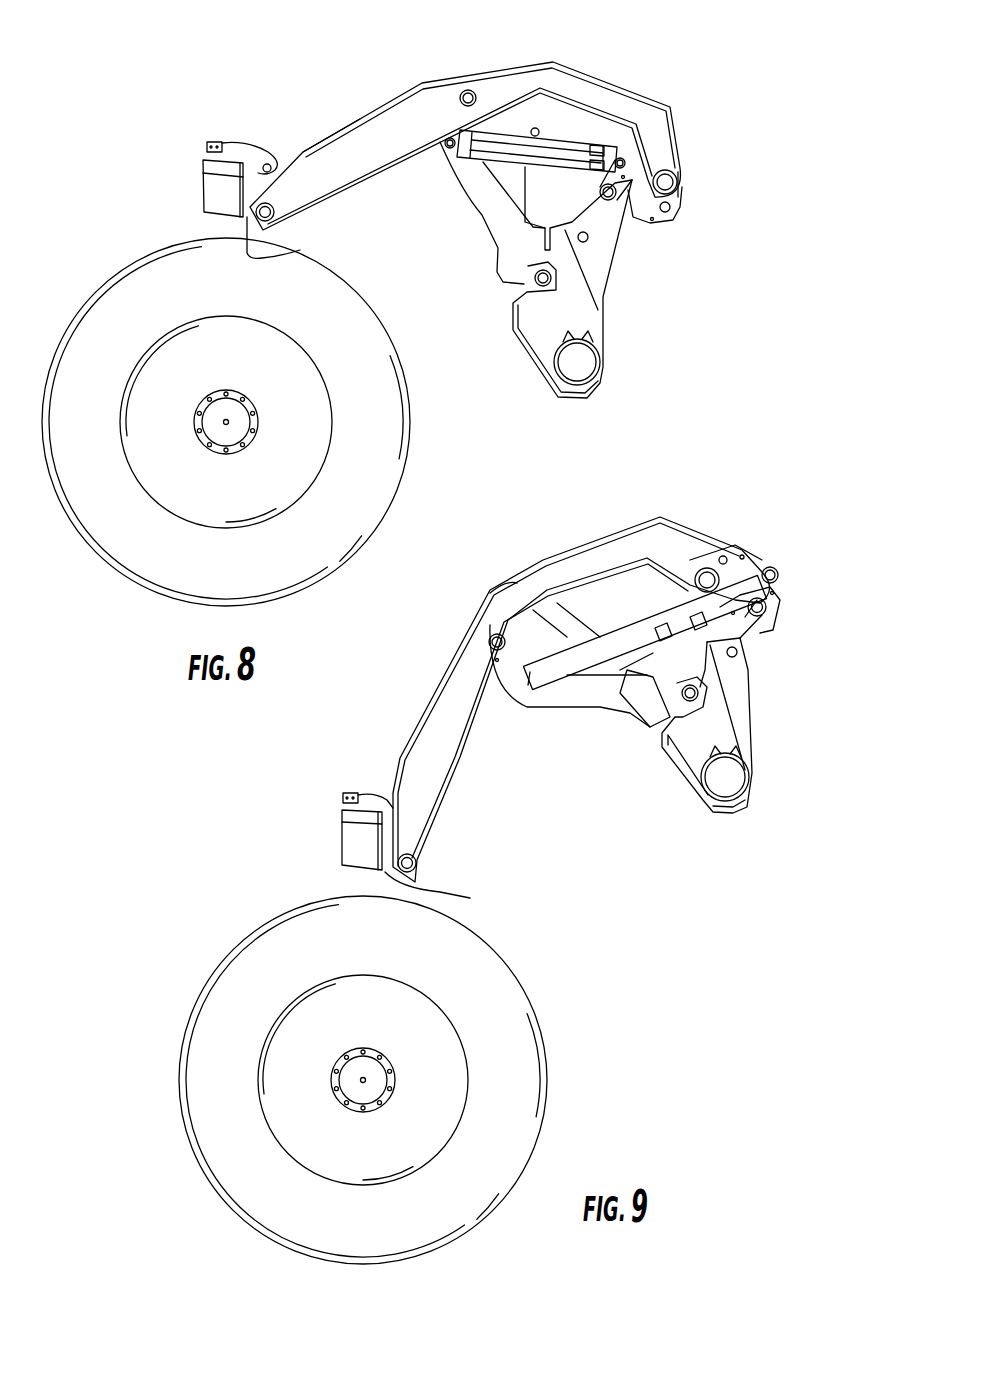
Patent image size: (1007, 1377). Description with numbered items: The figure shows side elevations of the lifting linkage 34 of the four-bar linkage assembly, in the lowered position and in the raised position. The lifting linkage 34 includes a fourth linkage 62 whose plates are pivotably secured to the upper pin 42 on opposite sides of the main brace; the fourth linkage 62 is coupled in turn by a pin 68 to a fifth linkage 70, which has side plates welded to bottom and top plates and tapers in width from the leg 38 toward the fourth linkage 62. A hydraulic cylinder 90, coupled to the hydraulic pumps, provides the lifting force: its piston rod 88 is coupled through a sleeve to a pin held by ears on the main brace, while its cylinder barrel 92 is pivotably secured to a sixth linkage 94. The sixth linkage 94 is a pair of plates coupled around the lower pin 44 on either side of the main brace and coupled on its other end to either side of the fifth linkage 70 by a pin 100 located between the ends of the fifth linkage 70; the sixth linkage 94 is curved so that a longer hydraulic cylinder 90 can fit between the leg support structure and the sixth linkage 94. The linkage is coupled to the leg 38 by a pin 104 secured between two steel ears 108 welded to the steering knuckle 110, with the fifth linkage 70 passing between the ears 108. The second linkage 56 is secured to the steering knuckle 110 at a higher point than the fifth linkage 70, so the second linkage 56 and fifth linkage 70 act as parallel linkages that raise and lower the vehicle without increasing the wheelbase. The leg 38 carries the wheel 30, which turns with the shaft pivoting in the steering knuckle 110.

In FIG. 8, the wheel 30 is at (411, 420).
In FIG. 9, the wheel 30 is at (547, 1110).
In FIG. 8, the lifting linkage 34 is at (292, 92).
In FIG. 9, the lifting linkage 34 is at (458, 608).
In FIG. 8, the leg 38 is at (182, 234).
In FIG. 9, the leg 38 is at (332, 885).
In FIG. 8, the pin 42 is at (632, 167).
In FIG. 9, the pin 42 is at (778, 587).
In FIG. 8, the pin 44 is at (520, 290).
In FIG. 9, the pin 44 is at (703, 690).
In FIG. 8, the second linkage 56 is at (308, 118).
In FIG. 8, the fourth linkage 62 is at (678, 148).
In FIG. 9, the fourth linkage 62 is at (766, 613).
In FIG. 8, the pin 68 is at (680, 190).
In FIG. 9, the pin 68 is at (714, 572).
In FIG. 8, the fifth linkage 70 is at (410, 103).
In FIG. 9, the fifth linkage 70 is at (463, 680).
In FIG. 8, the piston rod 88 is at (622, 150).
In FIG. 9, the piston rod 88 is at (675, 598).
In FIG. 8, the hydraulic cylinder 90 is at (537, 127).
In FIG. 9, the hydraulic cylinder 90 is at (578, 690).
In FIG. 8, the cylinder barrel 92 is at (605, 147).
In FIG. 9, the cylinder barrel 92 is at (627, 700).
In FIG. 8, the sixth linkage 94 is at (478, 222).
In FIG. 9, the sixth linkage 94 is at (607, 710).
In FIG. 8, the pin 100 is at (470, 90).
In FIG. 9, the pin 100 is at (497, 632).
In FIG. 8, the pin 104 is at (277, 212).
In FIG. 9, the pin 104 is at (418, 862).
In FIG. 8, the ears 108 is at (300, 250).
In FIG. 9, the ears 108 is at (470, 898).
In FIG. 8, the steering knuckle 110 is at (203, 170).
In FIG. 9, the steering knuckle 110 is at (367, 831).